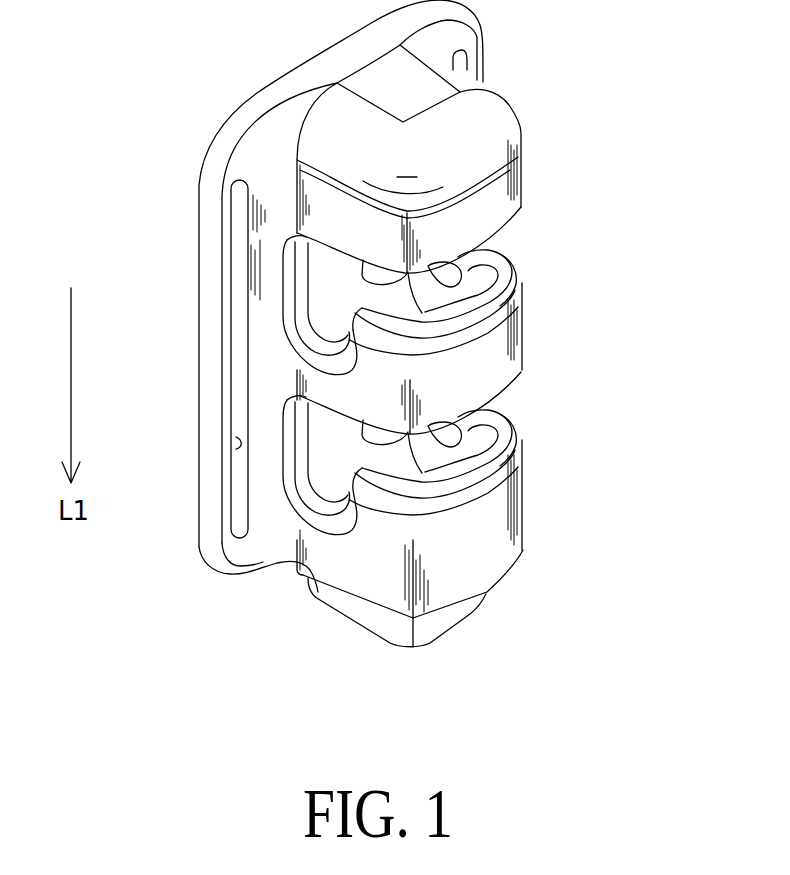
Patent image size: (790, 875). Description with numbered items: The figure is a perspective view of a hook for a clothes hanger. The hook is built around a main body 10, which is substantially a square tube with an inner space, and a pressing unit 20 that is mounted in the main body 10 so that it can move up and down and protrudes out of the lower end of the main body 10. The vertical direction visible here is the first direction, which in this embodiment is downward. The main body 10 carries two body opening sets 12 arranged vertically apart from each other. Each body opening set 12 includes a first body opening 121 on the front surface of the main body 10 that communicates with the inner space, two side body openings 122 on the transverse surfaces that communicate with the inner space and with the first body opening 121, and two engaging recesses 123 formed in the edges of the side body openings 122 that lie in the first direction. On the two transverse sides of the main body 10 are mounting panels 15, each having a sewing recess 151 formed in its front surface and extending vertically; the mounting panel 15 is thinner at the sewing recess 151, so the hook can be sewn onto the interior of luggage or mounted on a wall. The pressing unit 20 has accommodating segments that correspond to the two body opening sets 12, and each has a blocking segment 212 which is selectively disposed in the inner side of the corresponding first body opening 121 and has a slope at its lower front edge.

The main body 10 is at (517, 88).
The body opening set 12 is at (531, 236).
The first body opening 121 is at (468, 282).
The side body opening 122 is at (408, 306).
The engaging recess 123 is at (360, 318).
The mounting panel 15 is at (212, 393).
The sewing recess 151 is at (240, 447).
The pressing unit 20 is at (455, 638).
The blocking segment 212 is at (372, 441).